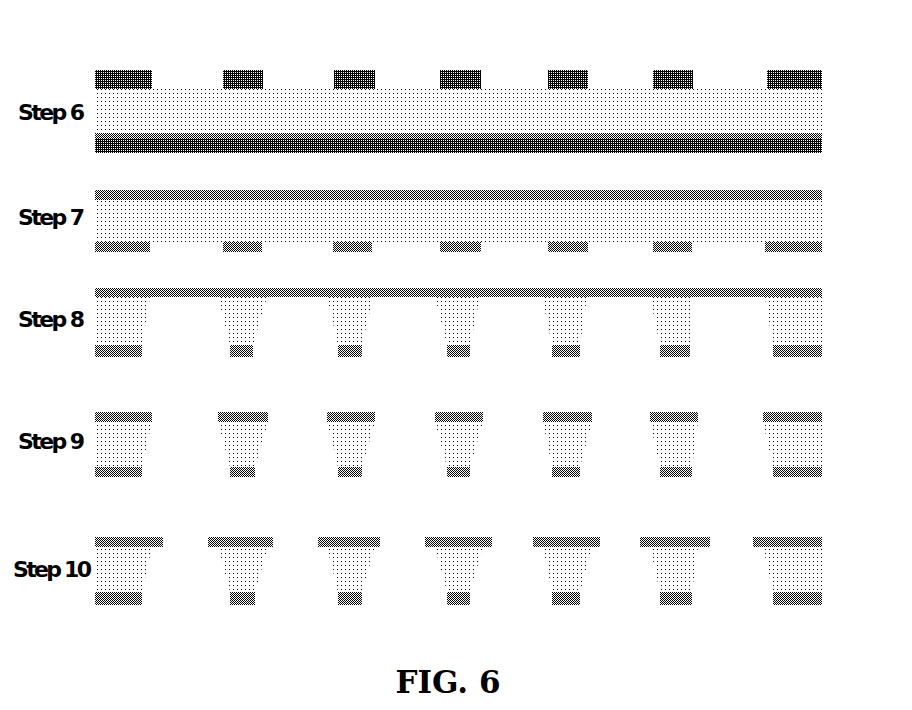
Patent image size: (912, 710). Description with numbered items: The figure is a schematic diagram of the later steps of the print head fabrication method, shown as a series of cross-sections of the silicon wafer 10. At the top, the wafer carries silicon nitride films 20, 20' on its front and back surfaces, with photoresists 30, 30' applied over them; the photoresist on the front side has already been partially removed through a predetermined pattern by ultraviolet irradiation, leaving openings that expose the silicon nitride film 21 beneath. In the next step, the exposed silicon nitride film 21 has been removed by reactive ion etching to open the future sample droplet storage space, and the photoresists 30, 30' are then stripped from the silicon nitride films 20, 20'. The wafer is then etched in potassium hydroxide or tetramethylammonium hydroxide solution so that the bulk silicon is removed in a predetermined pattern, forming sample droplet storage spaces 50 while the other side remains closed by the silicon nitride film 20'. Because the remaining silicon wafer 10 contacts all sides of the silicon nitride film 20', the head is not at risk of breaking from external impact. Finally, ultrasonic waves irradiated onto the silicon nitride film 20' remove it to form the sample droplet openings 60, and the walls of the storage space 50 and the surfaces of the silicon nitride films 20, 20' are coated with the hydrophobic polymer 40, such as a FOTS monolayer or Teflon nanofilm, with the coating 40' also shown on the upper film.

The silicon wafer 10 is at (823, 113).
The silicon nitride film 20 is at (484, 358).
The silicon nitride film 20' is at (486, 351).
The silicon nitride film 21 is at (726, 80).
The photoresist 30 is at (484, 86).
The photoresist 30' is at (486, 156).
The hydrophobic polymer 40 is at (461, 624).
The top electrode 40' is at (480, 526).
The sample droplet storage space 50 is at (732, 460).
The sample droplet opening 60 is at (734, 416).